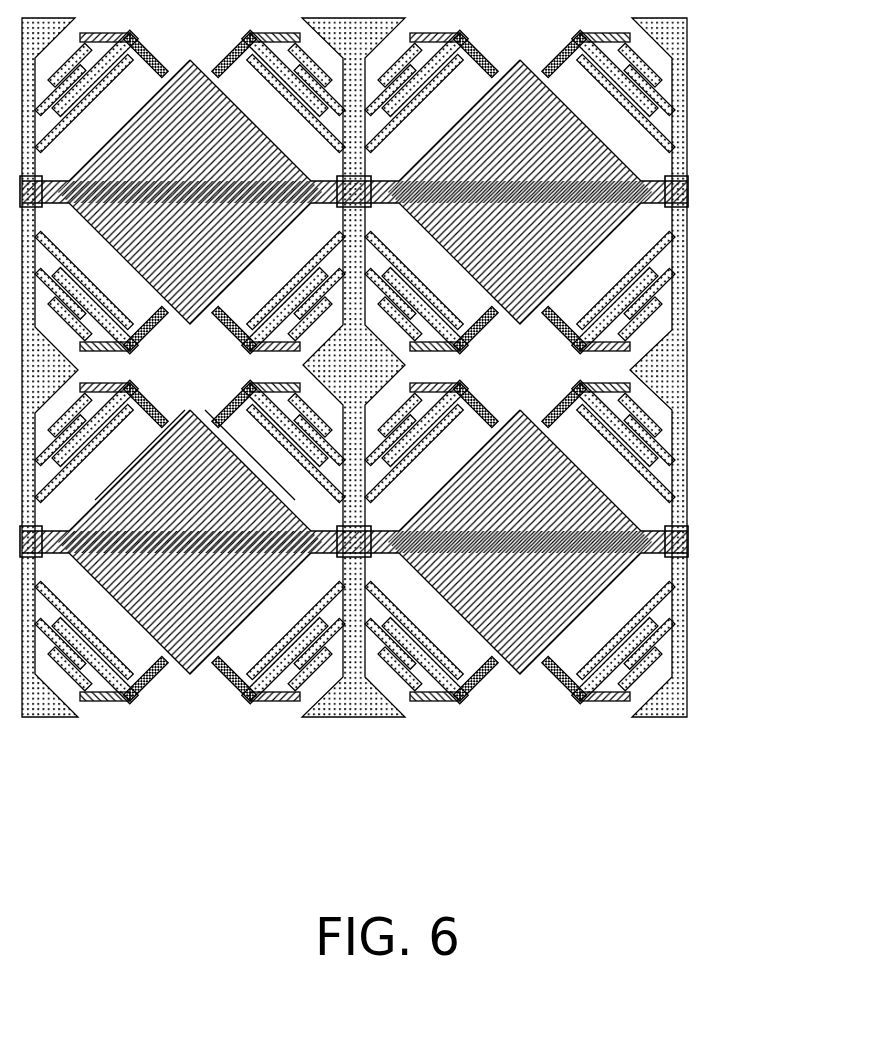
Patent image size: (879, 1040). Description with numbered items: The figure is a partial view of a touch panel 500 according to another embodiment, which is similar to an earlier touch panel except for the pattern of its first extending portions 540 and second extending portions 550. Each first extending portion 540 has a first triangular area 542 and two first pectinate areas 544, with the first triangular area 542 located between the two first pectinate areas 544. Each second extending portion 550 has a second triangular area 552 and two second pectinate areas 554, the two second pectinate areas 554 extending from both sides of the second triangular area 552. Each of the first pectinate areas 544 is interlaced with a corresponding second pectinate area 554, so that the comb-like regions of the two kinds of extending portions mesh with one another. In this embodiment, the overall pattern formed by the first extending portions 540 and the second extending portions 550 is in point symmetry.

The touch panel 500 is at (689, 775).
The first extending portion 540 is at (783, 242).
The first triangular area 542 is at (380, 370).
The first pectinate areas 544 is at (407, 272).
The second extending portion 550 is at (275, 795).
The second triangular area 552 is at (187, 453).
The second pectinate areas 554 is at (140, 413).